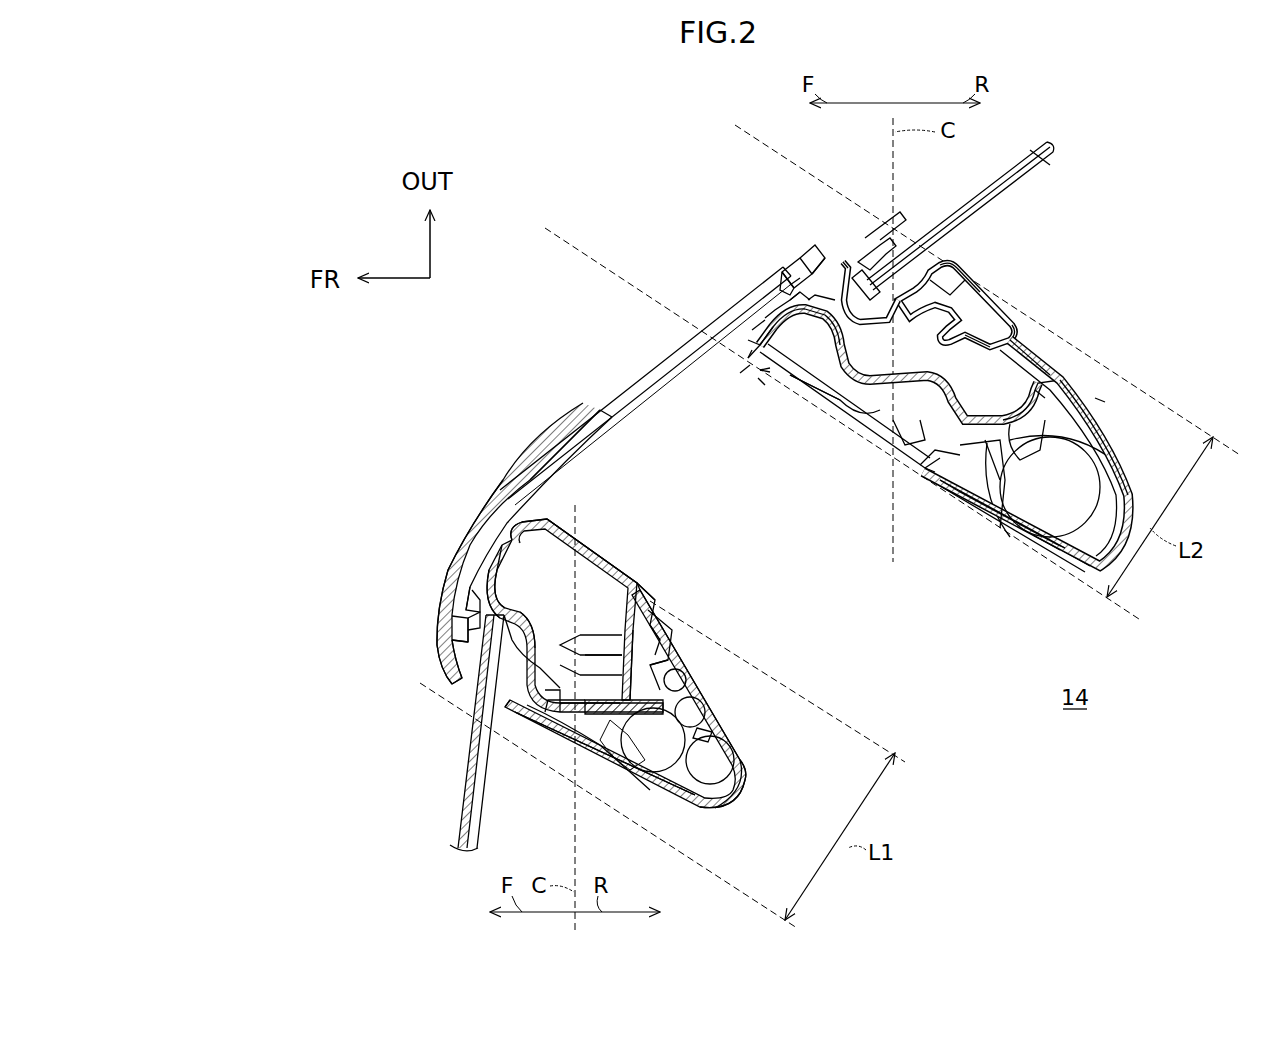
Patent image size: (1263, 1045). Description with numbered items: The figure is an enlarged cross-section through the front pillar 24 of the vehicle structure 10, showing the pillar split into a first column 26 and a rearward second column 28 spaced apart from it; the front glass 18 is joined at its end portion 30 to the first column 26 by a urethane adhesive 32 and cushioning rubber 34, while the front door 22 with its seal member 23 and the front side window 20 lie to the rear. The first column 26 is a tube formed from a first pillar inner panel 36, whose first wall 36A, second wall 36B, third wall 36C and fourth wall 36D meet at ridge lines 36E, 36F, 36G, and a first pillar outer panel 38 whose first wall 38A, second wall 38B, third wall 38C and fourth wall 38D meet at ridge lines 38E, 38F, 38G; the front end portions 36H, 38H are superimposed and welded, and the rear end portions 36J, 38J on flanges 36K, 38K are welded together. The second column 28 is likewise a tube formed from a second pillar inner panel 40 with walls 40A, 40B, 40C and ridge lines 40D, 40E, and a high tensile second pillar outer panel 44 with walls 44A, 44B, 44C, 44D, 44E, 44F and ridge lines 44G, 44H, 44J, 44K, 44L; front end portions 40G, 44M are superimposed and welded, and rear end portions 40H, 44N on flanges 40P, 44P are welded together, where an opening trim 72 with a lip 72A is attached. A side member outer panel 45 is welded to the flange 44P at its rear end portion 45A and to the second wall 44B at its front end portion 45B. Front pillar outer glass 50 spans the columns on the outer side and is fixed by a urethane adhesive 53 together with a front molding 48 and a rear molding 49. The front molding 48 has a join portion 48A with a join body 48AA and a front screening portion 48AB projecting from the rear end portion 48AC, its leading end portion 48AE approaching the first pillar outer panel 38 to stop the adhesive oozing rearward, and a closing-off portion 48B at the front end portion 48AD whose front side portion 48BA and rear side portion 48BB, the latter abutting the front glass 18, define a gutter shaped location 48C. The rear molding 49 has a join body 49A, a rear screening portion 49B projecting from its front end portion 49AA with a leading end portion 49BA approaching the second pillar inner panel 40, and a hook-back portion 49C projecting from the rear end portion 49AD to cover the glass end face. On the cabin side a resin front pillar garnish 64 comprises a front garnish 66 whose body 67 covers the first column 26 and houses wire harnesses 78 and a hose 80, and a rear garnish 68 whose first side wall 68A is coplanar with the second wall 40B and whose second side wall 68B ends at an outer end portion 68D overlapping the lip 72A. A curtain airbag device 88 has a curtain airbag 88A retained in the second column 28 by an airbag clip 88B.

The vehicle side door 10 is at (582, 135).
The front glass 18 is at (462, 805).
The front side window 20 is at (1023, 190).
The front door 22 is at (1012, 148).
The seal member 23 is at (945, 280).
The front pillar 24 is at (668, 170).
The first column 26 is at (588, 518).
The second column 28 is at (780, 440).
The vehicle width direction end portion 30 is at (475, 690).
The urethane adhesive 32 is at (465, 610).
The cushioning rubber 34 is at (485, 720).
The first pillar inner panel 36 is at (655, 790).
The first wall 36A is at (455, 560).
The second wall 36B is at (520, 600).
The third wall 36C is at (520, 720).
The fourth wall 36D is at (590, 750).
The ridge line 36E is at (455, 595).
The ridge line 36F is at (611, 700).
The ridge line 36G is at (540, 740).
The vehicle front side end portion 36H is at (460, 522).
The vehicle rear side end portion 36J is at (710, 800).
The flange 36K is at (690, 805).
The first pillar outer panel 38 is at (630, 570).
The first wall 38A is at (483, 513).
The second wall 38B is at (590, 546).
The third wall 38C is at (617, 621).
The fourth wall 38D is at (640, 645).
The ridge line 38E is at (535, 520).
The ridge line 38F is at (650, 582).
The ridge line 38G is at (655, 616).
The vehicle front side end portion 38H is at (513, 577).
The vehicle rear side end portion 38J is at (700, 711).
The flange 38K is at (680, 691).
The second pillar inner panel 40 is at (837, 482).
The first wall 40A is at (760, 370).
The second wall 40B is at (790, 420).
The third wall 40C is at (990, 490).
The ridge line 40D is at (758, 378).
The ridge line 40E is at (921, 467).
The vehicle front side end portion 40G is at (748, 358).
The vehicle rear side end portion 40H is at (1105, 400).
The flange 40P is at (1110, 480).
The second pillar outer panel 44 is at (838, 300).
The first wall 44A is at (792, 345).
The second wall 44B is at (770, 300).
The third wall 44C is at (850, 265).
The fourth wall 44D is at (870, 400).
The fifth wall 44E is at (885, 432).
The sixth wall 44F is at (1010, 320).
The ridge line 44G is at (765, 320).
The ridge line 44H is at (810, 298).
The ridge line 44J is at (836, 426).
The ridge line 44K is at (960, 305).
The ridge line 44L is at (985, 315).
The vehicle front side end portion 44M is at (778, 420).
The vehicle rear side end portion 44N is at (1060, 385).
The flange 44P is at (1030, 335).
The side member outer panel 45 is at (858, 280).
The vehicle rear side end portion 45A is at (1025, 325).
The vehicle front side end portion 45B is at (770, 300).
The front molding 48 is at (432, 628).
The join portion 48A is at (527, 460).
The join body 48AA is at (442, 575).
The front screening portion 48AB is at (530, 455).
The vehicle rear side end portion 48AC is at (485, 470).
The vehicle front side end portion 48AD is at (438, 620).
The leading end portion 48AE is at (530, 500).
The closing-off portion 48B is at (468, 645).
The vehicle front side portion 48BA is at (462, 672).
The vehicle rear side portion 48BB is at (470, 644).
The gutter shaped location 48C is at (447, 682).
The rear molding 49 is at (790, 250).
The join body 49A is at (760, 290).
The vehicle front side end portion 49AA is at (752, 330).
The vehicle rear side end portion 49AD is at (793, 268).
The rear screening portion 49B is at (748, 340).
The leading end portion 49BA is at (740, 373).
The hook-back portion 49C is at (810, 255).
The front pillar outer glass 50 is at (596, 398).
The urethane adhesive 53 is at (765, 305).
The front pillar garnish 64 is at (752, 796).
The front garnish 66 is at (750, 795).
The body 67 is at (705, 690).
The rear garnish 68 is at (1093, 575).
The first side wall 68A is at (1020, 540).
The second side wall 68B is at (1095, 385).
The vehicle width direction outer side end portion 68D is at (1045, 365).
The opening trim 72 is at (1098, 442).
The lip 72A is at (1040, 350).
The wire harnesses 78 is at (688, 672).
The hose 80 is at (712, 735).
The curtain airbag device 88 is at (1070, 552).
The curtain airbag 88A is at (1071, 553).
The airbag clip 88B is at (962, 482).